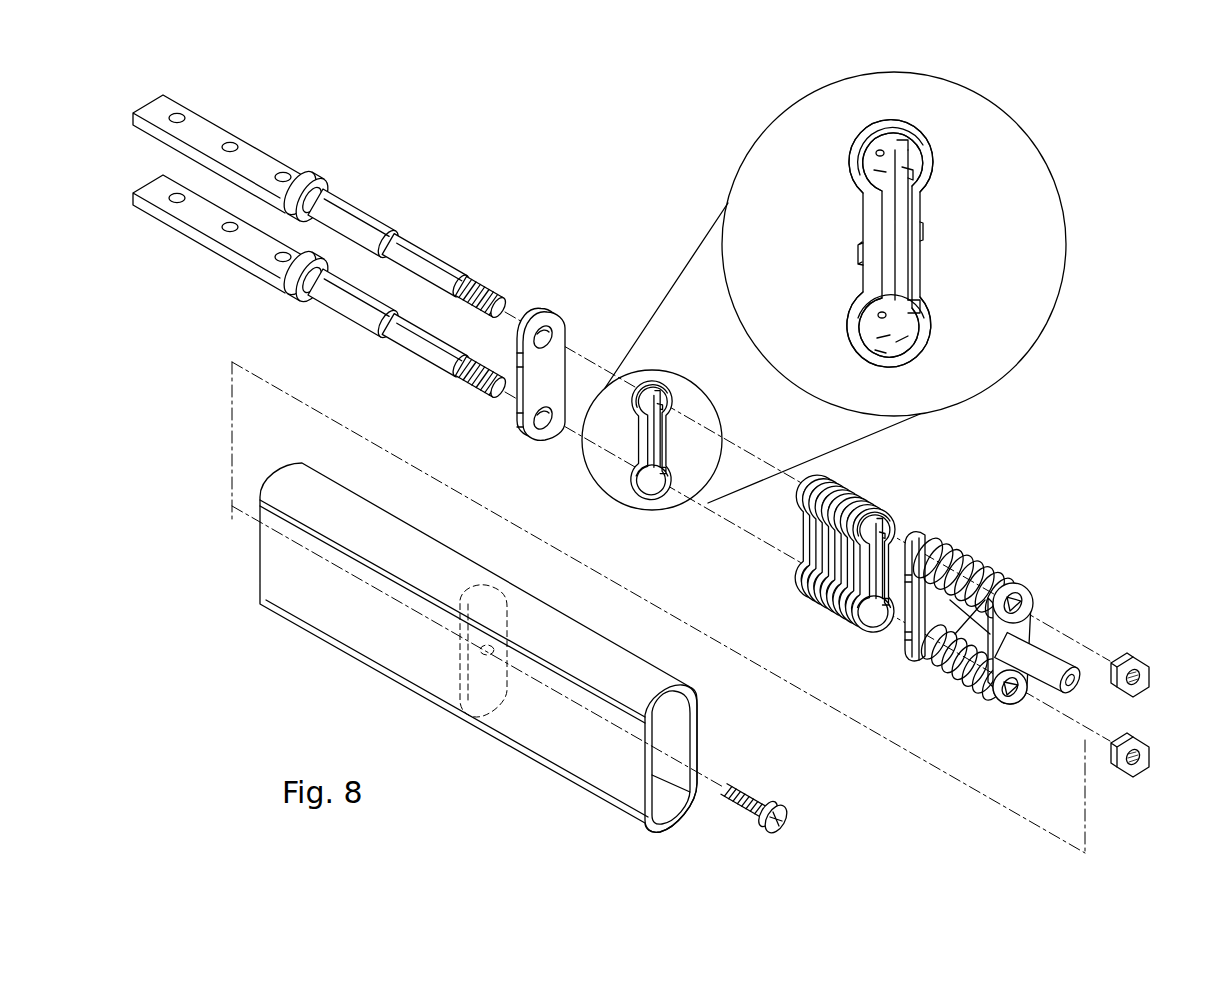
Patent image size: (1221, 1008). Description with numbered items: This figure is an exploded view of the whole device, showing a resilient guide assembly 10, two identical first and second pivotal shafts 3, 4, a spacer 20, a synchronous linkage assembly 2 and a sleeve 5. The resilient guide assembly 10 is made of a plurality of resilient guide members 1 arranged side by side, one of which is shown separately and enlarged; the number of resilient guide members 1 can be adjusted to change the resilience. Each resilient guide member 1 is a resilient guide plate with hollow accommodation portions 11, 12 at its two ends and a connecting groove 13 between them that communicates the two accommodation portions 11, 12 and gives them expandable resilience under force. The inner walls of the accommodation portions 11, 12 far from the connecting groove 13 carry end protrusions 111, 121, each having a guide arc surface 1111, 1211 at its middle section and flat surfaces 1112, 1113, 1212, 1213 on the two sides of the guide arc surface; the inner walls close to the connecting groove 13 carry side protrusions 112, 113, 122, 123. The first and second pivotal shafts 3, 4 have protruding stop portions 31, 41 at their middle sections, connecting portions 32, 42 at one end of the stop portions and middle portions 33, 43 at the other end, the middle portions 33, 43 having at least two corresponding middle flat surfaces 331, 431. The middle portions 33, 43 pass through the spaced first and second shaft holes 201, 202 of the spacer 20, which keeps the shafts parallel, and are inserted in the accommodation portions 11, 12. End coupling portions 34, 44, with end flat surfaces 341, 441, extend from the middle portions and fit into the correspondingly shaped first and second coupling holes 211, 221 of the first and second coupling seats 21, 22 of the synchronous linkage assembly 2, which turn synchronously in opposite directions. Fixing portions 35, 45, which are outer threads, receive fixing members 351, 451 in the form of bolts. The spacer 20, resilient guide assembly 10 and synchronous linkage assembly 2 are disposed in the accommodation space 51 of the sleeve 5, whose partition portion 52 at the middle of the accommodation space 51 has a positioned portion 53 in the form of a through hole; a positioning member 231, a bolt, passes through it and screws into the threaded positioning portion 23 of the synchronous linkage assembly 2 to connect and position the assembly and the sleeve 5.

The resilient guide member 1 is at (690, 355).
The accommodation portion 11 is at (881, 175).
The end protrusion 111 is at (895, 142).
The guide arc surface 1111 is at (883, 171).
The flat surface 1112 is at (905, 140).
The flat surface 1113 is at (876, 153).
The side protrusion 112 is at (925, 170).
The side protrusion 113 is at (870, 192).
The accommodation portion 12 is at (890, 346).
The end protrusion 121 is at (893, 365).
The guide arc surface 1211 is at (882, 337).
The flat surface 1212 is at (907, 338).
The flat surface 1213 is at (873, 348).
The side protrusion 122 is at (920, 302).
The side protrusion 123 is at (878, 315).
The connecting groove 13 is at (895, 258).
The resilient guide assembly 10 is at (905, 494).
The synchronous linkage assembly 2 is at (1024, 621).
The first coupling seat 21 is at (1036, 582).
The first coupling hole 211 is at (1025, 600).
The second coupling seat 22 is at (1007, 709).
The second coupling hole 221 is at (1013, 707).
The positioning portion 23 is at (1087, 667).
The positioning member 231 is at (793, 813).
The spacer 20 is at (518, 375).
The first shaft hole 201 is at (542, 307).
The second shaft hole 202 is at (545, 437).
The first pivotal shaft 3 is at (320, 223).
The stop portion 31 is at (312, 173).
The connecting portion 32 is at (252, 152).
The middle portion 33 is at (362, 235).
The middle flat surface 331 is at (380, 237).
The end coupling portion 34 is at (428, 276).
The end flat surface 341 is at (440, 265).
The fixing portion 35 is at (477, 317).
The fixing member 351 is at (1152, 680).
The second pivotal shaft 4 is at (320, 297).
The stop portion 41 is at (290, 292).
The connecting portion 42 is at (252, 248).
The middle portion 43 is at (362, 313).
The middle flat surface 431 is at (383, 315).
The end coupling portion 44 is at (414, 358).
The end flat surface 441 is at (410, 333).
The fixing portion 45 is at (475, 390).
The fixing member 451 is at (1150, 760).
The sleeve 5 is at (500, 647).
The accommodation space 51 is at (677, 720).
The partition portion 52 is at (477, 713).
The positioned portion 53 is at (507, 640).